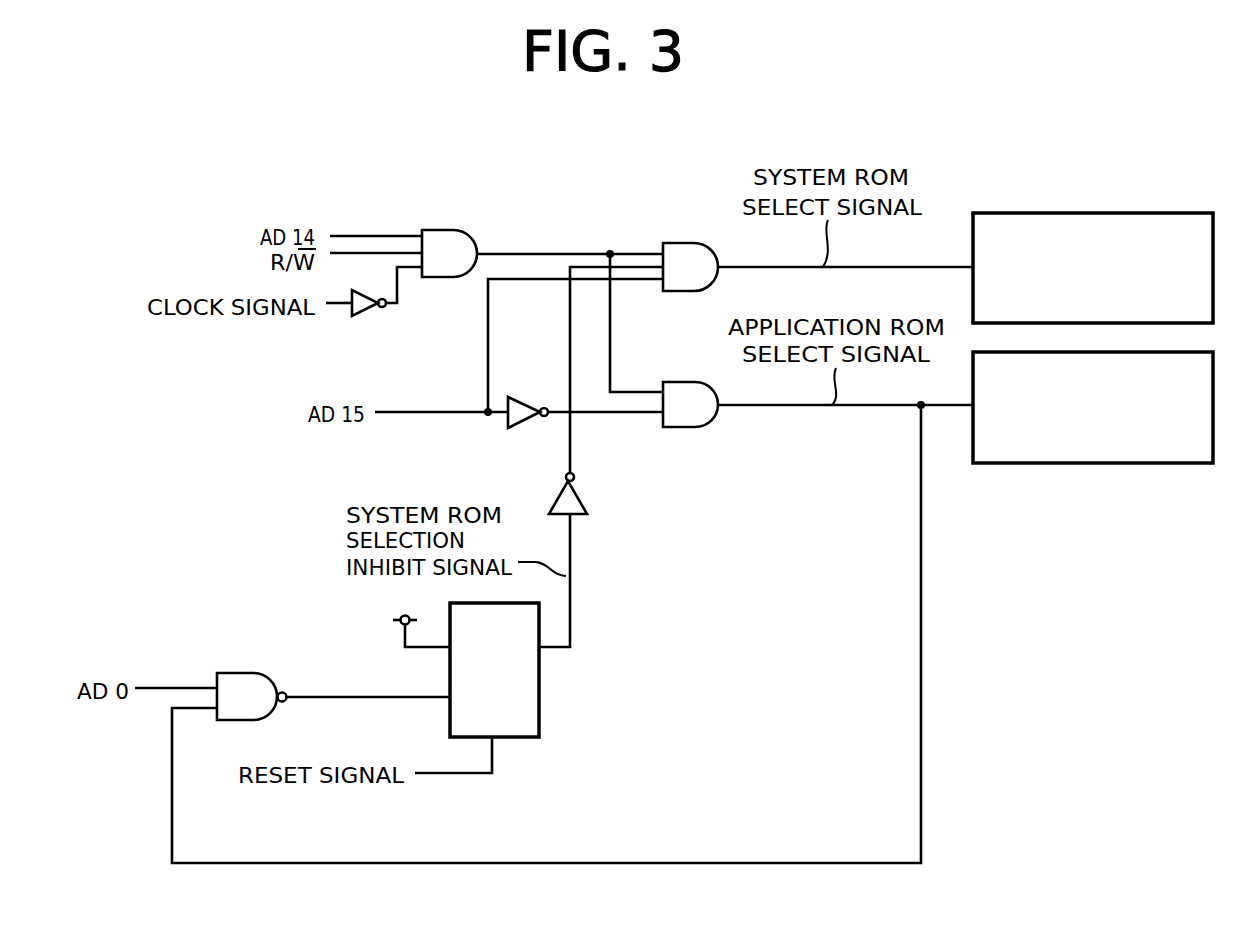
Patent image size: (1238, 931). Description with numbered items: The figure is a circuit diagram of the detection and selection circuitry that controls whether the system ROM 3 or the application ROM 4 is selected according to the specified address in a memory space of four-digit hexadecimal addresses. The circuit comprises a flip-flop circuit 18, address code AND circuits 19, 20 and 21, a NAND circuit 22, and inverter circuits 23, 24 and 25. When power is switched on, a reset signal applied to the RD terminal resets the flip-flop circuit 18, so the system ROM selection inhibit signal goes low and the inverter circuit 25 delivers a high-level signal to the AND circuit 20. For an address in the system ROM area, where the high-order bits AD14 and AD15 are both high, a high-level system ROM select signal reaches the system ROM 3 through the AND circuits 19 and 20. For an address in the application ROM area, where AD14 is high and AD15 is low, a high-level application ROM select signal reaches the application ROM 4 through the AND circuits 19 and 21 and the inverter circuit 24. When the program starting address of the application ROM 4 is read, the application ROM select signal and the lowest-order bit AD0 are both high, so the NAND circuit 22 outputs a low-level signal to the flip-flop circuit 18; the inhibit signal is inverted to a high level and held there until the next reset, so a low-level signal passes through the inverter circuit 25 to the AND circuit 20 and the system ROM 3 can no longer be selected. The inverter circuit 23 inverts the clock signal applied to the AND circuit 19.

The system ROM 3 is at (1092, 213).
The application ROM 4 is at (1084, 463).
The flip-flop circuit 18 is at (539, 703).
The AND circuit 19 is at (440, 230).
The AND circuit 20 is at (673, 243).
The AND circuit 21 is at (678, 382).
The NAND circuit 22 is at (240, 673).
The inverter circuit 23 is at (368, 318).
The inverter circuit 24 is at (523, 398).
The inverter circuit 25 is at (587, 506).